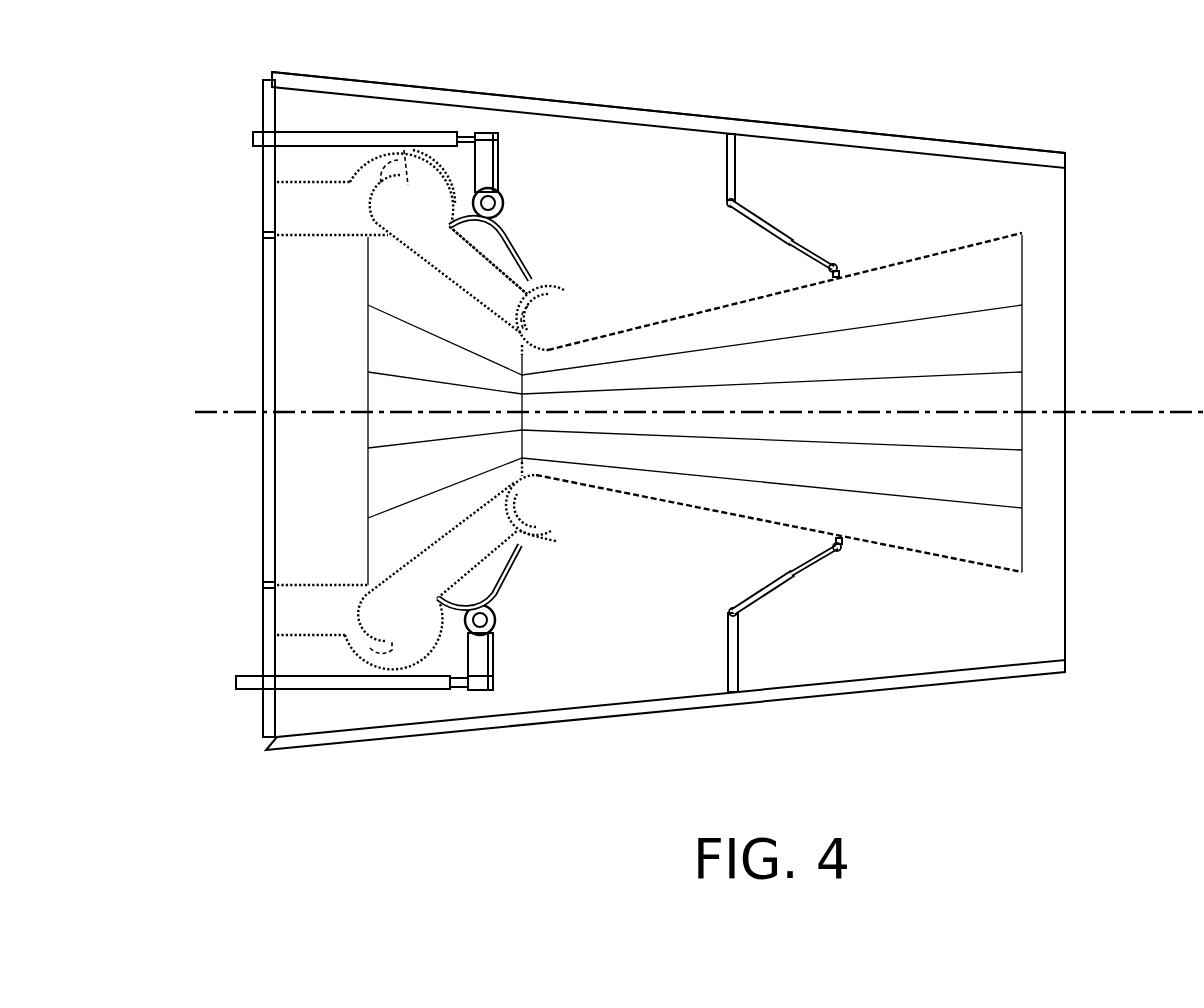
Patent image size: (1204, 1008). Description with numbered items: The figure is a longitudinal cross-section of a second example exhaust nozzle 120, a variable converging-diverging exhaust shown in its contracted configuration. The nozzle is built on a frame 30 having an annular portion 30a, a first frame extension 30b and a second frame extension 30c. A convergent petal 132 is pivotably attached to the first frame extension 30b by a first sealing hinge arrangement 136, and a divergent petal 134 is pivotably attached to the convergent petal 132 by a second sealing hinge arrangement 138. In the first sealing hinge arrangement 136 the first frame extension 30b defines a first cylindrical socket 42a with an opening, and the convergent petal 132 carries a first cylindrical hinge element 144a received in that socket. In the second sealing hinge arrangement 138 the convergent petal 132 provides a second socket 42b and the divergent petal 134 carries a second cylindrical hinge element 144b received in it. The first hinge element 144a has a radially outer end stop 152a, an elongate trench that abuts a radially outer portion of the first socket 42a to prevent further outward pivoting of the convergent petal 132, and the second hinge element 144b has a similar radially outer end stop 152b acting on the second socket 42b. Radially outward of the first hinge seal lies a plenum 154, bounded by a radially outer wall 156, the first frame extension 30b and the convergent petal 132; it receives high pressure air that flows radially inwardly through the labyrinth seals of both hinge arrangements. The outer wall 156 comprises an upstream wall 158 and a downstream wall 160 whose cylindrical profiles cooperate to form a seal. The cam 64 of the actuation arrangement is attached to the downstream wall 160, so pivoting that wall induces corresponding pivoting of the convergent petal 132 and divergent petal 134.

The second example exhaust nozzle 120 is at (1001, 61).
The frame 30 is at (776, 123).
The annular portion 30a is at (596, 105).
The first frame extension 30b is at (262, 104).
The second frame extension 30c is at (738, 172).
The convergent petal 132 is at (422, 262).
The divergent petal 134 is at (905, 261).
The first sealing hinge arrangement 136 is at (401, 188).
The second sealing hinge arrangement 138 is at (545, 318).
The first cylindrical hinge element 144a is at (393, 182).
The second cylindrical hinge element 144b is at (520, 330).
The radially outer end stop 152a is at (400, 182).
The radially outer end stop 152b is at (554, 296).
The plenum 154 is at (450, 271).
The radially outer wall 156 is at (432, 160).
The upstream wall 158 is at (320, 181).
The downstream wall 160 is at (526, 263).
The first cylindrical socket 42a is at (372, 207).
The second socket 42b is at (523, 305).
The cam 64 is at (510, 240).